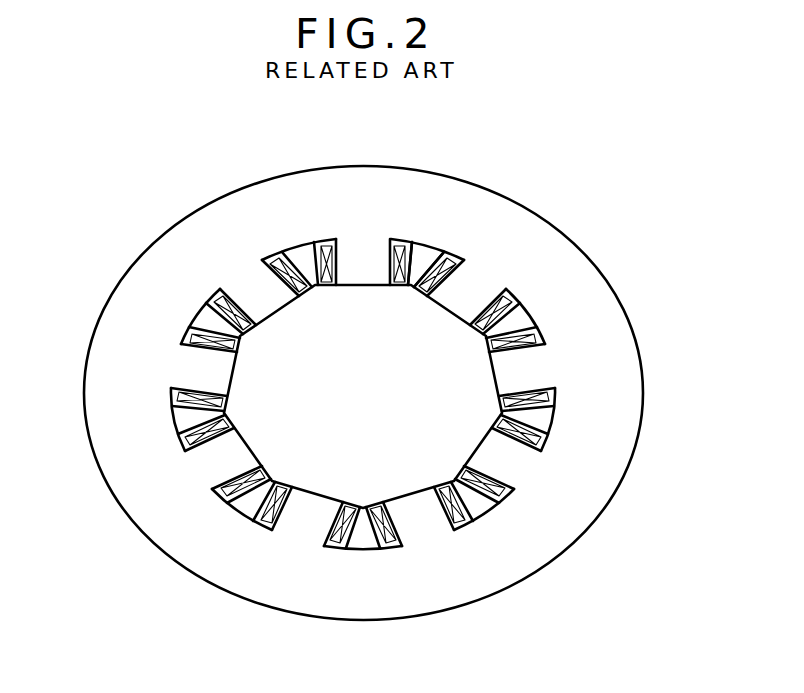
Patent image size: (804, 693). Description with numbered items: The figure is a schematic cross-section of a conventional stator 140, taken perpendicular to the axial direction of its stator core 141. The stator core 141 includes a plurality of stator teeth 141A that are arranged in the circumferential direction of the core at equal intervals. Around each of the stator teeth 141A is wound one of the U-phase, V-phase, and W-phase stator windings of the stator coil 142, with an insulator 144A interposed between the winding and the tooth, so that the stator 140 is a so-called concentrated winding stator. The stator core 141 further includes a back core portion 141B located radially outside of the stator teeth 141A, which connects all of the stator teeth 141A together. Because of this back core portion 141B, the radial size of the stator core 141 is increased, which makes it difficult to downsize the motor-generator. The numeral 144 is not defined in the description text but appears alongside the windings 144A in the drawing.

The stator 140 is at (128, 206).
The stator core 141 is at (344, 182).
The stator teeth 141A is at (467, 287).
The back core portion 141B is at (540, 265).
The stator coil 142 is at (425, 263).
The coil 144 is at (515, 293).
The insulator 144A is at (525, 385).